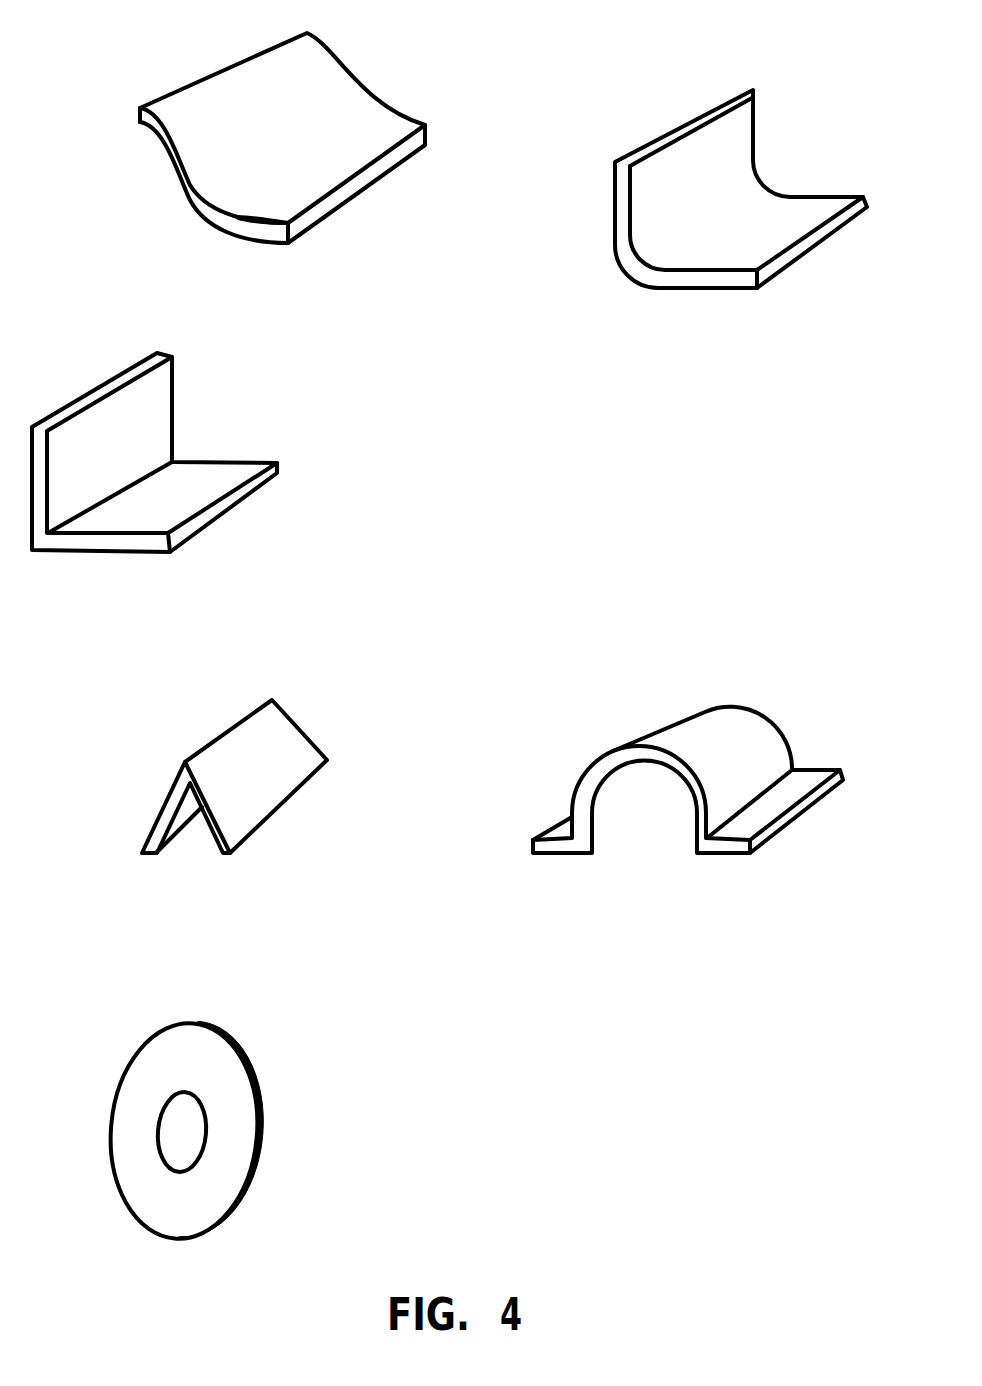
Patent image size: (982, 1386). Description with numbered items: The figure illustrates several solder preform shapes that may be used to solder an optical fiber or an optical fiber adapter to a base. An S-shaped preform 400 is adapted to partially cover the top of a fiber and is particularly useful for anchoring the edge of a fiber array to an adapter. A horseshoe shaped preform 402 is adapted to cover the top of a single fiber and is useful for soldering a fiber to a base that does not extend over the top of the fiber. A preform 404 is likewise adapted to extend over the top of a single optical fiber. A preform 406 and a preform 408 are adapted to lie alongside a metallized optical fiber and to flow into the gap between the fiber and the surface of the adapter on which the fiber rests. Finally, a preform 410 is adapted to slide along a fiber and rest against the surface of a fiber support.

The S-shaped preform 400 is at (350, 70).
The horseshoe shaped preform 402 is at (767, 715).
The preform 404 is at (293, 720).
The preform 406 is at (760, 127).
The preform 408 is at (280, 473).
The preform 410 is at (262, 1113).